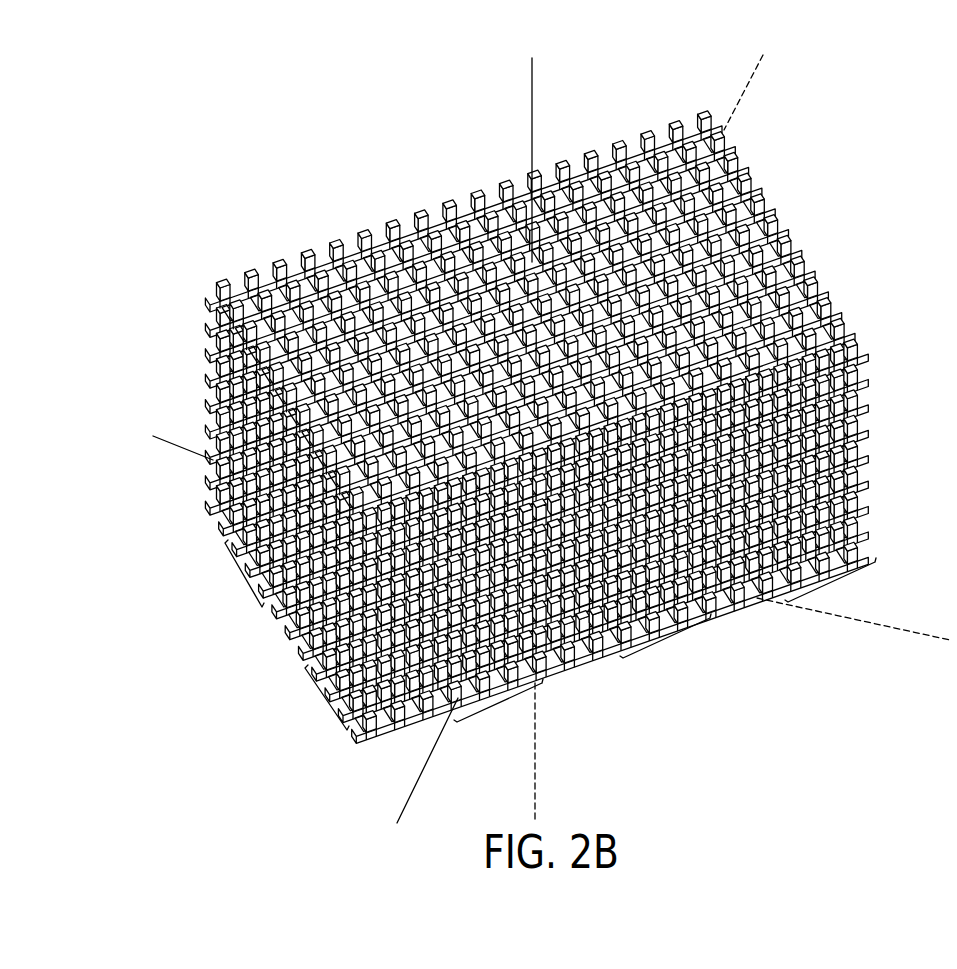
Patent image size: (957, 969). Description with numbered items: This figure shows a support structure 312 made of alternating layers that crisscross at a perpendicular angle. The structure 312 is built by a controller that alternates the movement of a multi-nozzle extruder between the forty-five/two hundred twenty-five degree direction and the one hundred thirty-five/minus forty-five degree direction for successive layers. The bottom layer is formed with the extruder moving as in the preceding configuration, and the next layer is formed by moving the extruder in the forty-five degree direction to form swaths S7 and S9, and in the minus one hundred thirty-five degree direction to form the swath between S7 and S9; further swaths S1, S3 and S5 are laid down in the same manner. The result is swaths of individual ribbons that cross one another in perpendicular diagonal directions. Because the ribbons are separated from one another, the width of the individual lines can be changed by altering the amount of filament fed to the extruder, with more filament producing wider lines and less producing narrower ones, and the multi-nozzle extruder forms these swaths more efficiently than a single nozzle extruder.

The support structure 312 is at (858, 310).
The swath S1 is at (832, 582).
The swath S3 is at (665, 640).
The swath S5 is at (500, 702).
The swath S7 is at (326, 699).
The swath S9 is at (244, 575).